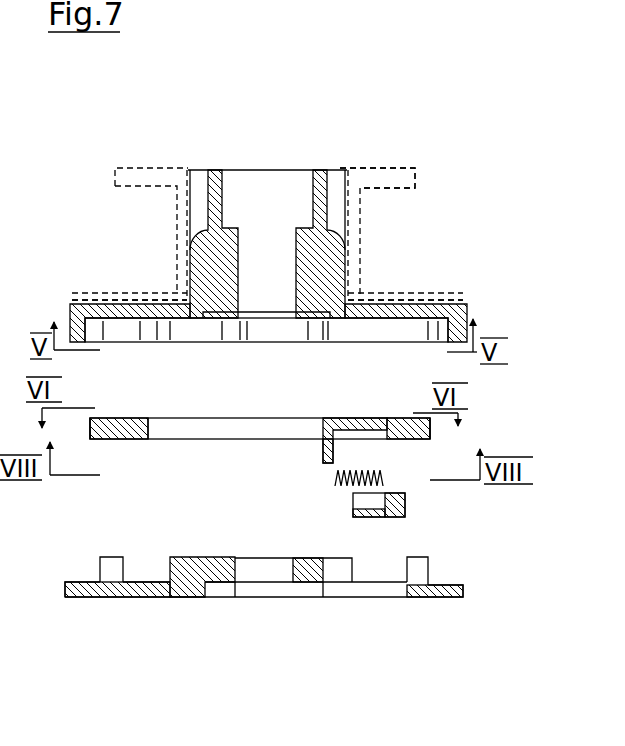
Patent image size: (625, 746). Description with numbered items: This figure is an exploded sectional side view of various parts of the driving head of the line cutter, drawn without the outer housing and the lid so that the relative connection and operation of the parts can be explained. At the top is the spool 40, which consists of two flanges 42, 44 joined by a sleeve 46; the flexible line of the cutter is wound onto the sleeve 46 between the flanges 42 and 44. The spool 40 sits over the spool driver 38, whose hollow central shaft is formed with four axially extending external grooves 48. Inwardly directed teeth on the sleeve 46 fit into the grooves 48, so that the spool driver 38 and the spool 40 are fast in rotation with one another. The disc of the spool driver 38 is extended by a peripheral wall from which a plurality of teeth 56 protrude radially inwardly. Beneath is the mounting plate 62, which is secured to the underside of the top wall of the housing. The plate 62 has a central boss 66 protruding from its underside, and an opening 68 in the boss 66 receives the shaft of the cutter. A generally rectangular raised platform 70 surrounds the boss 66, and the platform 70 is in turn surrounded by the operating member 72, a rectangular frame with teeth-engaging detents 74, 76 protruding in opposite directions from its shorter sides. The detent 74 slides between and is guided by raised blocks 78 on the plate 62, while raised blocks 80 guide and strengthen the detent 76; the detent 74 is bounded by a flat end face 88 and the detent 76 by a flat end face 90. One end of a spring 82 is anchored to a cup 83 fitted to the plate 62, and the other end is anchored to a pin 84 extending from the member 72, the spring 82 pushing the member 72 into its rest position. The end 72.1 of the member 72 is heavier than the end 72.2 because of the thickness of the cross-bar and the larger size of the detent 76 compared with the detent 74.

The spool driver 38 is at (468, 307).
The spool 40 is at (367, 167).
The flange 42 is at (462, 300).
The flange 44 is at (416, 166).
The sleeve 46 is at (332, 278).
The external grooves 48 is at (198, 203).
The teeth 56 is at (92, 330).
The mounting plate 62 is at (168, 588).
The central boss 66 is at (312, 560).
The opening 68 is at (293, 572).
The raised platform 70 is at (218, 572).
The operating member 72 is at (334, 415).
The end of the member 72.1 is at (388, 416).
The end of the member 72.2 is at (135, 417).
The detent 74 is at (106, 428).
The detent 76 is at (430, 441).
The raised blocks 78 is at (110, 563).
The raised blocks 80 is at (422, 568).
The spring 82 is at (335, 483).
The cup 83 is at (405, 510).
The pin 84 is at (325, 448).
The flat end face 88 is at (90, 430).
The flat end face 90 is at (430, 427).